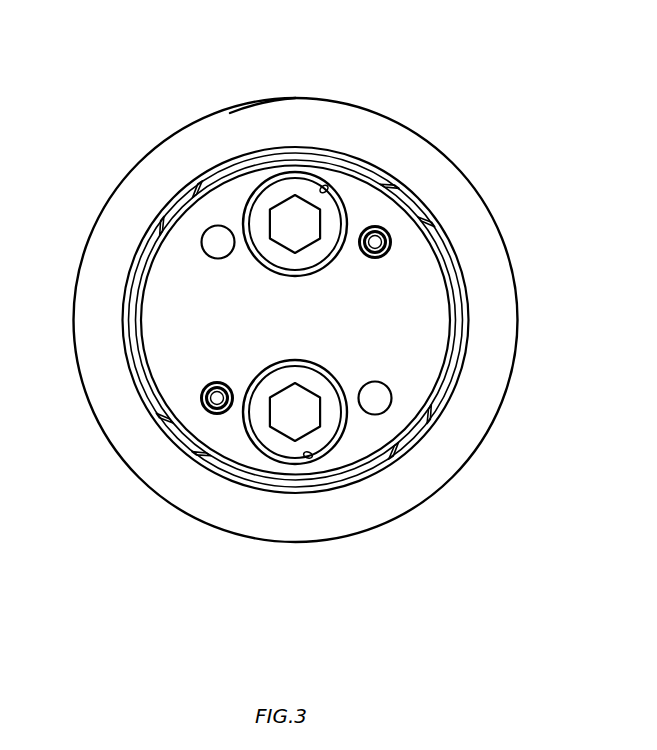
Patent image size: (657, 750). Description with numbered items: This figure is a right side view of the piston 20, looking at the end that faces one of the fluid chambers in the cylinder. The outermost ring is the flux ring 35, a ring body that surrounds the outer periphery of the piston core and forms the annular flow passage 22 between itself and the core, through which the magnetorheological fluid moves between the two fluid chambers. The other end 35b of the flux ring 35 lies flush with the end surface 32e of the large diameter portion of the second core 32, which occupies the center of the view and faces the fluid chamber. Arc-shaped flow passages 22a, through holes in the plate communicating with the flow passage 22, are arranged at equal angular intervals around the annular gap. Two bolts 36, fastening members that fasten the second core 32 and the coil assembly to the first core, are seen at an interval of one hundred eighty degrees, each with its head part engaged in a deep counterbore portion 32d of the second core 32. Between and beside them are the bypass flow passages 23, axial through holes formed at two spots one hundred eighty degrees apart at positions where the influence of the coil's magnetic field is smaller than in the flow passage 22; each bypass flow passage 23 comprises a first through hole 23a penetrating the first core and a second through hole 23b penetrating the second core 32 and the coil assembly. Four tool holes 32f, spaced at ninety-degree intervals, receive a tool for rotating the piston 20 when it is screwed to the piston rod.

The piston 20 is at (443, 98).
The flow passage 22 is at (417, 422).
The flow passage 22a is at (202, 170).
The bypass flow passage 23 is at (380, 423).
The first through hole 23a is at (391, 237).
The second through hole 23b is at (391, 250).
The second core 32 is at (147, 237).
The deep counterbore portion 32d is at (323, 187).
The end surface 32e is at (408, 318).
The tool hole 32f is at (207, 233).
The flux ring 35 is at (207, 117).
The other end 35b is at (258, 120).
The bolt 36 is at (308, 192).